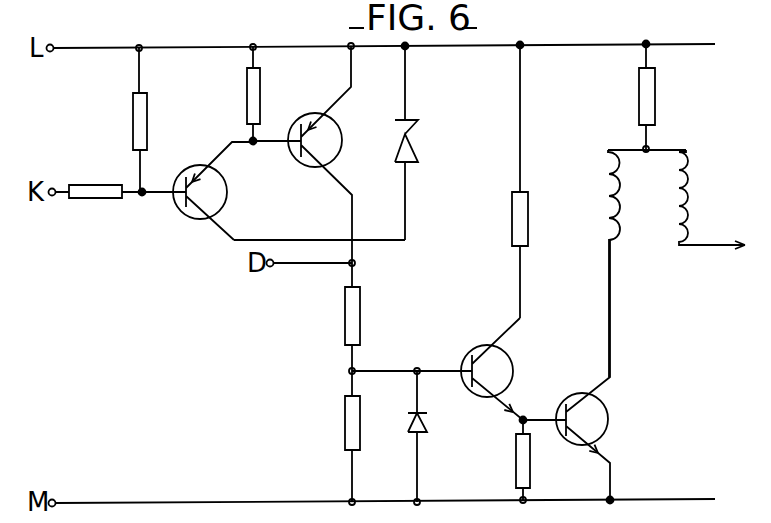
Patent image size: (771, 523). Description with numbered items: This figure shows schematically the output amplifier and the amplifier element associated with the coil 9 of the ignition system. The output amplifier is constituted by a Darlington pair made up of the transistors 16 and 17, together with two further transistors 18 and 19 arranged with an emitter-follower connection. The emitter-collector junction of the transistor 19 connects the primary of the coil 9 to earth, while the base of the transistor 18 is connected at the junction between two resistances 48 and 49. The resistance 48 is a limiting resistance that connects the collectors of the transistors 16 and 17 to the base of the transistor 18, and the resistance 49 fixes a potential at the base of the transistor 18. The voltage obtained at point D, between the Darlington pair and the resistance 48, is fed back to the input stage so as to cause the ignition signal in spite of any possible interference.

The coil 9 is at (620, 192).
The transistor 16 is at (193, 214).
The transistor 17 is at (308, 165).
The transistor 18 is at (507, 376).
The transistor 19 is at (596, 432).
The limiting resistance 48 is at (348, 315).
The resistance 49 is at (348, 428).